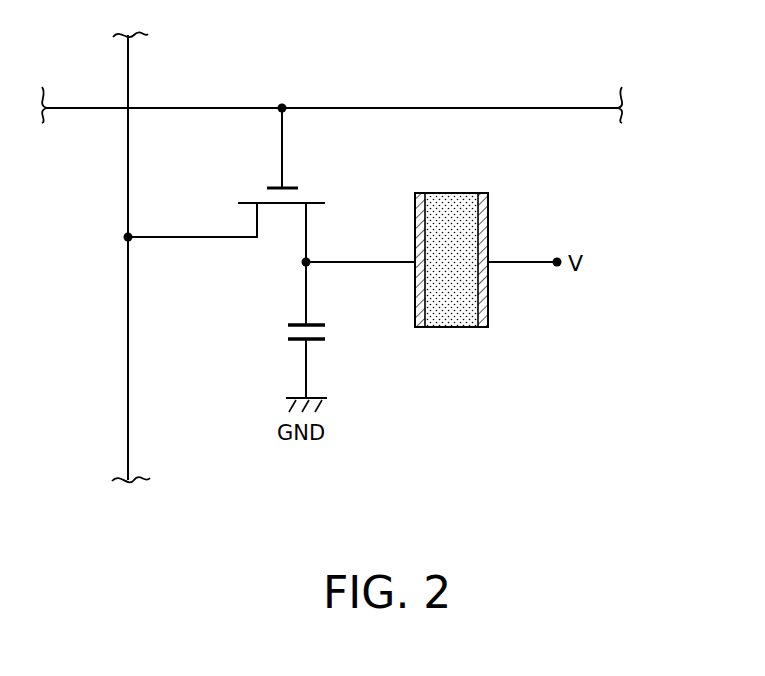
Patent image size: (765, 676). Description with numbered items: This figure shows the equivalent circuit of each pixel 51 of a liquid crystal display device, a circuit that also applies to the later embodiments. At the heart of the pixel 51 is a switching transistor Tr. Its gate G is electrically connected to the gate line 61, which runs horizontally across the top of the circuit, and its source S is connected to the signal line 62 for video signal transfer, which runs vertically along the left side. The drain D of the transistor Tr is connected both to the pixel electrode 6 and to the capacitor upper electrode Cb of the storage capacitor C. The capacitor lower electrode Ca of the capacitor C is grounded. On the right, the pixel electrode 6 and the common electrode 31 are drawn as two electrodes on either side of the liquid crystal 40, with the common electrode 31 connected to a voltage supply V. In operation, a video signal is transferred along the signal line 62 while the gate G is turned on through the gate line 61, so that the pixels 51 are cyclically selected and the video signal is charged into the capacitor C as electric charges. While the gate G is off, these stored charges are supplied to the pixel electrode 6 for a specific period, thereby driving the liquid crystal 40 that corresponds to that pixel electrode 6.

The gate line 61 is at (371, 108).
The signal line 62 is at (128, 312).
The pixel 51 is at (536, 60).
The pixel electrode 6 is at (420, 193).
The common electrode 31 is at (486, 193).
The liquid crystal 40 is at (456, 262).
The switching transistor Tr is at (340, 168).
The capacitor C is at (302, 330).
The capacitor upper electrode Cb is at (302, 325).
The capacitor lower electrode Ca is at (297, 340).